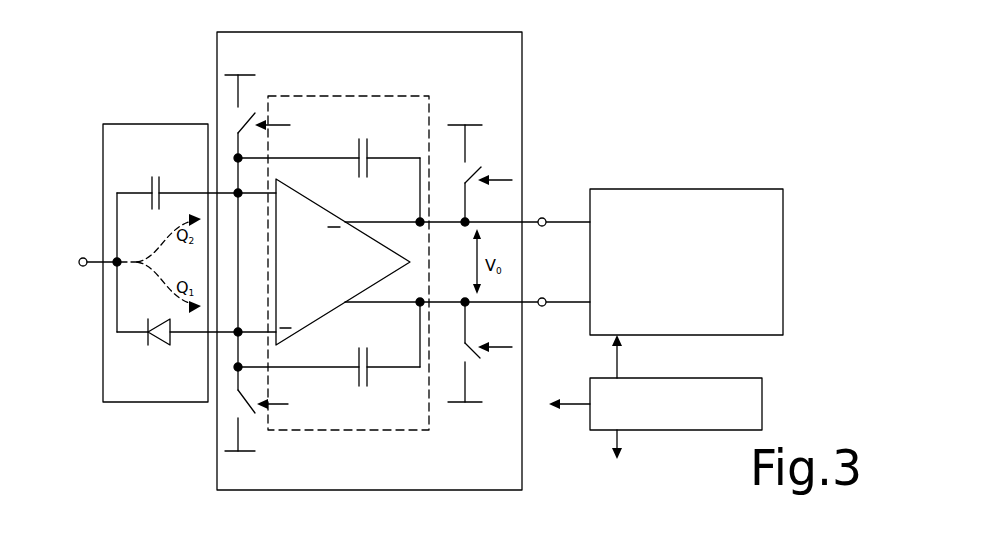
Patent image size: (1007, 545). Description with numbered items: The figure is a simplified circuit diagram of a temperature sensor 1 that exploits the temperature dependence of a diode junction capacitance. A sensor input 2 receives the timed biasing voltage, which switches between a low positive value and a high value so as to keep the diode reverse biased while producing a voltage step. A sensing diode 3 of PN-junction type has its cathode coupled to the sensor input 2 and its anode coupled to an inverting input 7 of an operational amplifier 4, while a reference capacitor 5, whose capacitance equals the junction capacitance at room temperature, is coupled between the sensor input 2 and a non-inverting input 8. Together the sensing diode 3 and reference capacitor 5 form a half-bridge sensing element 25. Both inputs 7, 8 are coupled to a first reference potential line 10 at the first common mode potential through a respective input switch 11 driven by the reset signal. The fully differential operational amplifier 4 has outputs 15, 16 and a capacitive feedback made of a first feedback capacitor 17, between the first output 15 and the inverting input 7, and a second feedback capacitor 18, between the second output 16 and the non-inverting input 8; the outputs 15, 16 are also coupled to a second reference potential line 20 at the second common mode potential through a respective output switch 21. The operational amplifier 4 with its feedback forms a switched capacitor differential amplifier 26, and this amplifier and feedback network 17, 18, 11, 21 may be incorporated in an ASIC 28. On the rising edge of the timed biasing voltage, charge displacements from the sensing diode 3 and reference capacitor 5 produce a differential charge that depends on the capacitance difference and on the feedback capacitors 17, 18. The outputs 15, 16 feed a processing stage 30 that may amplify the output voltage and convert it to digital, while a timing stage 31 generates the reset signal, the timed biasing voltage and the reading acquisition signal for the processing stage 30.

The temperature sensor 1 is at (642, 111).
The sensor input 2 is at (83, 257).
The sensing diode 3 is at (173, 347).
The operational amplifier 4 is at (312, 269).
The reference capacitor 5 is at (158, 173).
The inverting input 7 is at (238, 329).
The non-inverting input 8 is at (239, 197).
The first reference potential line 10 is at (232, 78).
The input switch 11 is at (240, 126).
The first output 15 is at (545, 299).
The second output 16 is at (541, 227).
The first feedback capacitor 17 is at (358, 375).
The second feedback capacitor 18 is at (357, 145).
The second reference potential line 20 is at (470, 128).
The output switch 21 is at (483, 168).
The sensing element 25 is at (127, 404).
The amplifier 26 is at (393, 431).
The ASIC 28 is at (522, 484).
The processing stage 30 is at (722, 205).
The timing stage 31 is at (747, 391).